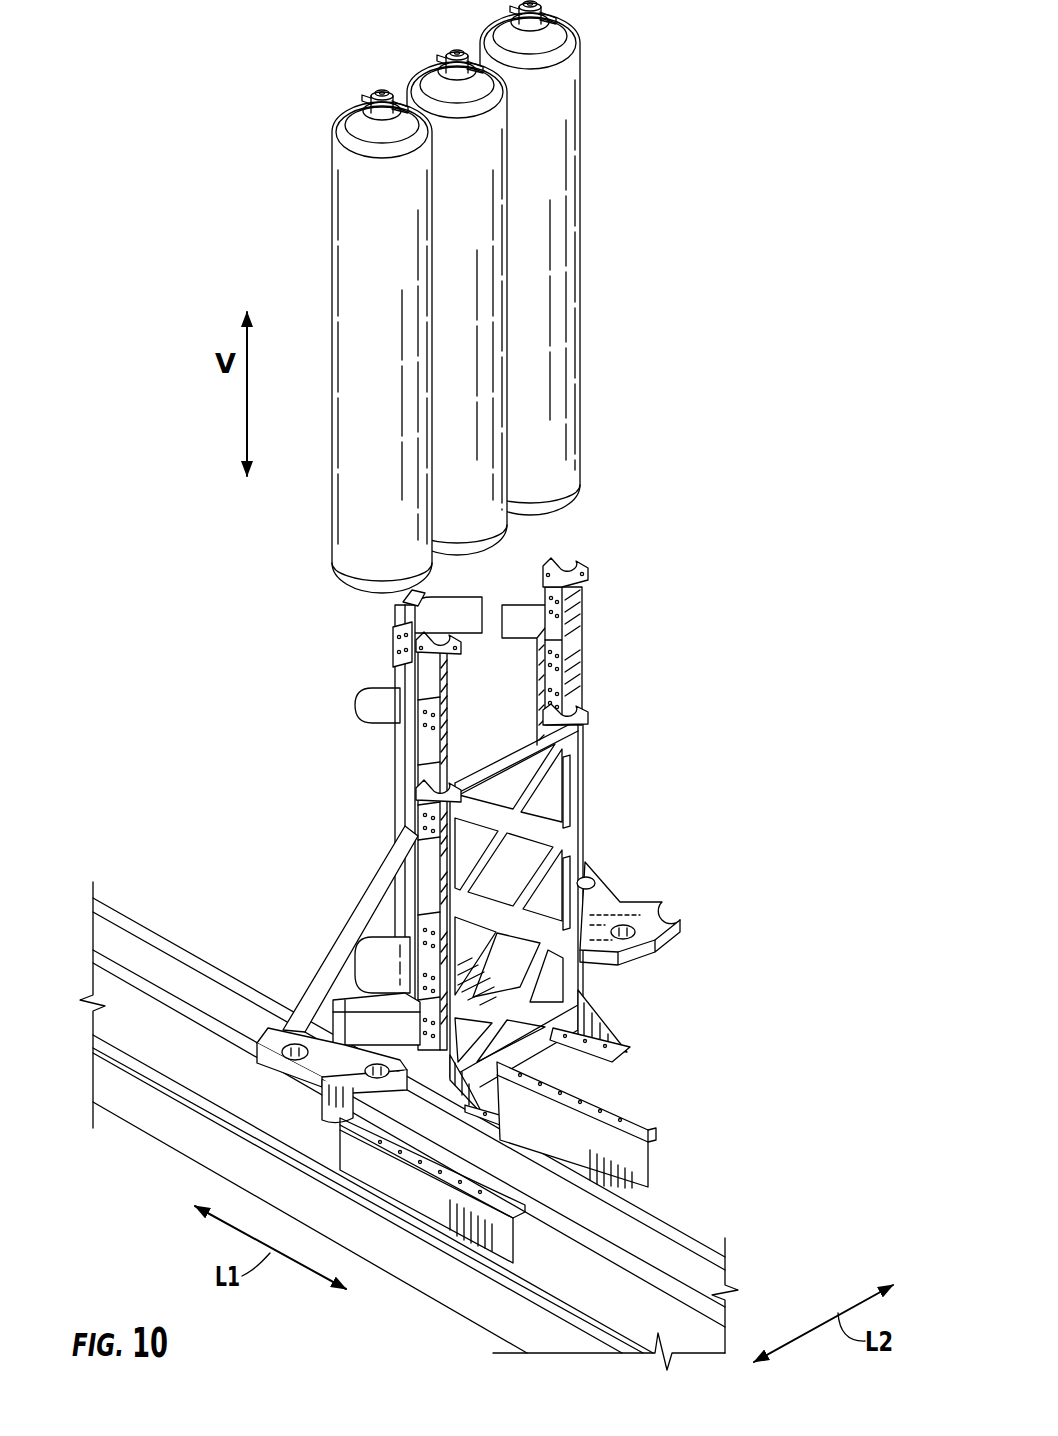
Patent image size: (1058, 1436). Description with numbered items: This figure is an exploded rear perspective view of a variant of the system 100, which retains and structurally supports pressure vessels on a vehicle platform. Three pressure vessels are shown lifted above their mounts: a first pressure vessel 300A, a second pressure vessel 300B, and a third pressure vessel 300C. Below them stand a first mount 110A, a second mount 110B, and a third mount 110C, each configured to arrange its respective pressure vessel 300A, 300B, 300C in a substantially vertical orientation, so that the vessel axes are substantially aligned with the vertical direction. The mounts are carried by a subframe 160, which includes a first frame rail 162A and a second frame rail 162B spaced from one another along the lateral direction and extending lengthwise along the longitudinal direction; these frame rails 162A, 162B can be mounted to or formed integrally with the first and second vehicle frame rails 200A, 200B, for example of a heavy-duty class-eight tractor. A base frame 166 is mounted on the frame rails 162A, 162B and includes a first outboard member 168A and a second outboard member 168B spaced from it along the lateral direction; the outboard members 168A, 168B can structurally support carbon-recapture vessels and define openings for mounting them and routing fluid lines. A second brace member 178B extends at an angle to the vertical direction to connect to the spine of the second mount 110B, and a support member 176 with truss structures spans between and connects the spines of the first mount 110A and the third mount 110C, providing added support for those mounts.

The system 100 is at (718, 485).
The first mount 110A is at (592, 636).
The second mount 110B is at (482, 646).
The third mount 110C is at (343, 672).
The subframe 160 is at (737, 1007).
The first frame rail 162A is at (652, 1170).
The second frame rail 162B is at (518, 1232).
The base frame 166 is at (692, 905).
The first outboard member 168A is at (625, 905).
The second outboard member 168B is at (262, 1042).
The support member 176 is at (552, 1030).
The second brace member 178B is at (356, 903).
The first vehicle frame rail 200A is at (694, 1247).
The second vehicle frame rail 200B is at (162, 1122).
The first pressure vessel 300A is at (580, 50).
The second pressure vessel 300B is at (437, 67).
The third pressure vessel 300C is at (368, 112).